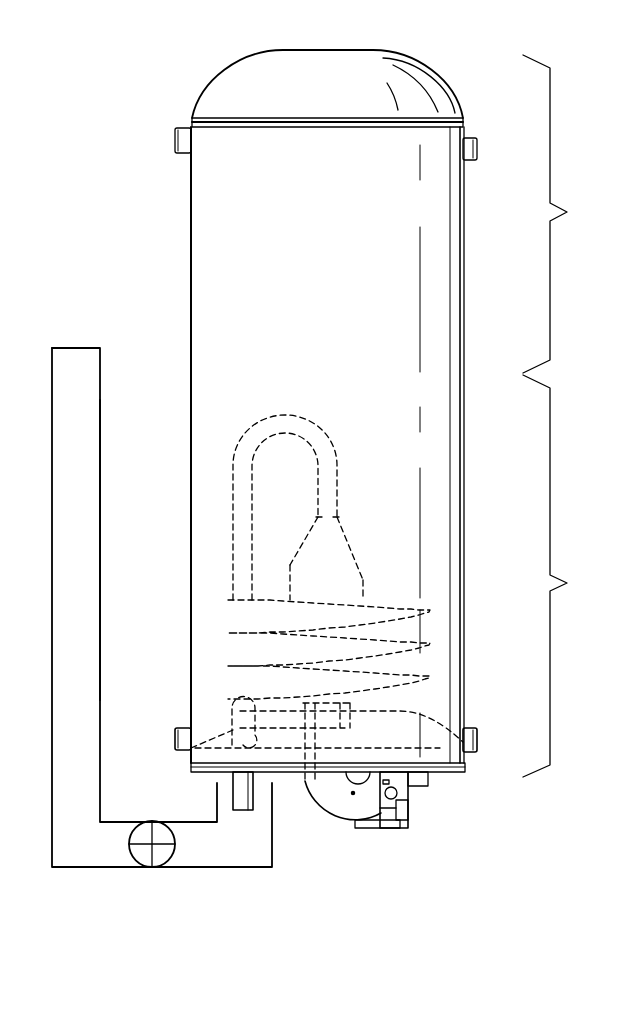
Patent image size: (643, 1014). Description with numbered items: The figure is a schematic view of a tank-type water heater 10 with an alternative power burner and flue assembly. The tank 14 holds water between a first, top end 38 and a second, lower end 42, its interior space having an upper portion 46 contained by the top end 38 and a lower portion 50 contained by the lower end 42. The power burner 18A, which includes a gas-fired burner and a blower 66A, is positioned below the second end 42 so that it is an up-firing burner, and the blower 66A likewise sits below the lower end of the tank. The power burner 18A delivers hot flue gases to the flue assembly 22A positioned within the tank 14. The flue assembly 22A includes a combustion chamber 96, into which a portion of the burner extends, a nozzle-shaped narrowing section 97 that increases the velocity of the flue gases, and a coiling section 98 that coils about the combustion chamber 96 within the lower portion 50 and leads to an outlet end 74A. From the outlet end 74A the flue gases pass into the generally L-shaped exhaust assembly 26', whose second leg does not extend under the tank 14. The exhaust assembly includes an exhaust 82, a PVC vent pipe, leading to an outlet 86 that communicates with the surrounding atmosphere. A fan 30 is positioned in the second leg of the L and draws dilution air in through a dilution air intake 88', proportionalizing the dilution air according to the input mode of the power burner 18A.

The water heater system 10 is at (428, 60).
The first end 38 is at (195, 102).
The tank 14 is at (190, 252).
The upper portion 46 is at (559, 214).
The lower portion 50 is at (559, 576).
The outlet 86 is at (78, 348).
The exhaust 82 is at (100, 487).
The flue assembly 22A is at (251, 430).
The narrowing section 97 is at (353, 543).
The combustion chamber 96 is at (367, 587).
The coiling section 98 is at (377, 660).
The exhaust assembly 26' is at (188, 702).
The dilution air intake 88' is at (176, 756).
The outlet end 74A is at (242, 793).
The second end 42 is at (460, 772).
The power burner 18A is at (340, 818).
The blower 66A is at (400, 828).
The fan 30 is at (167, 858).